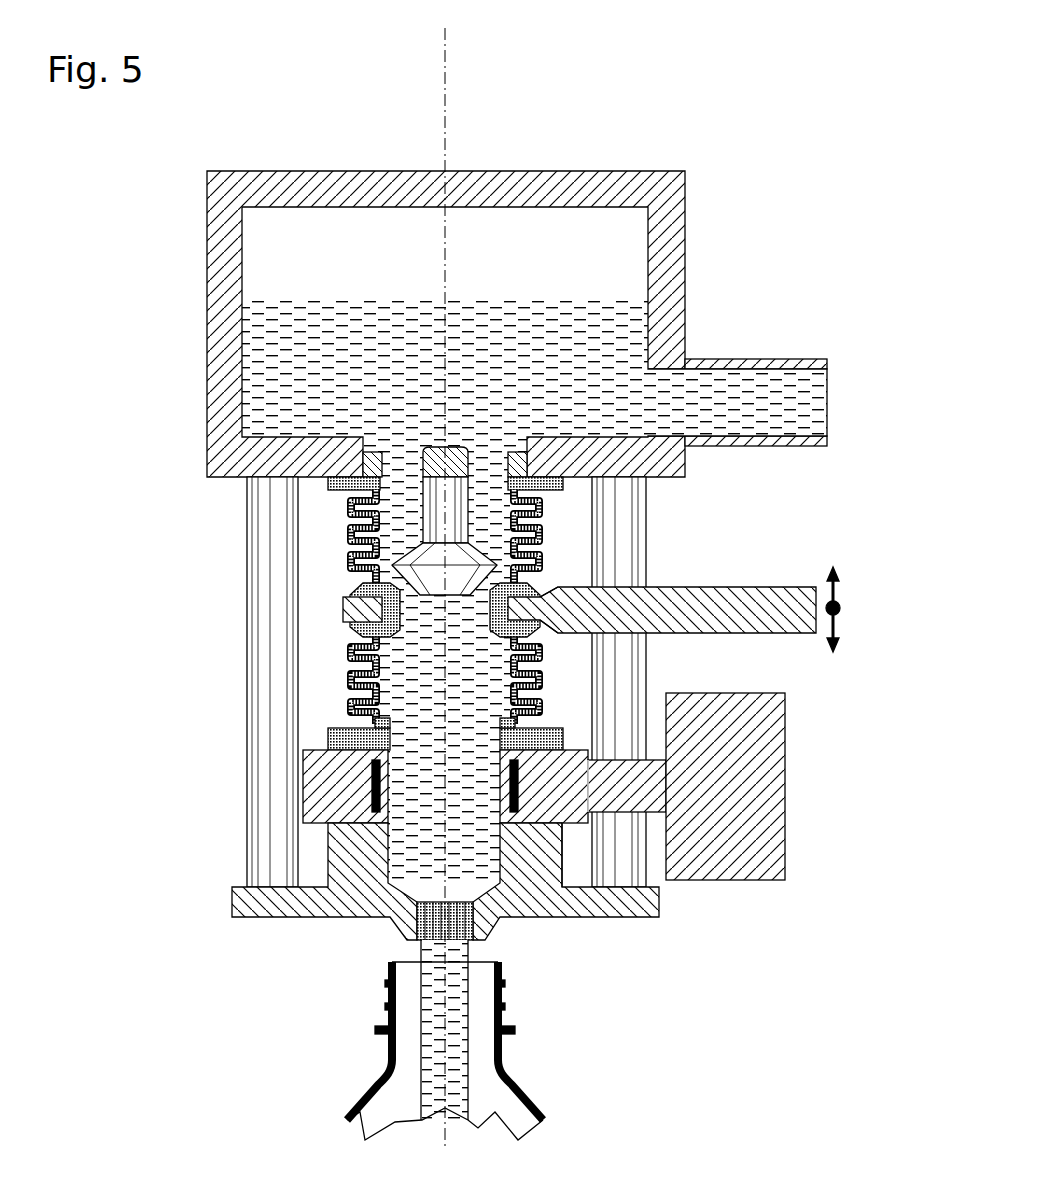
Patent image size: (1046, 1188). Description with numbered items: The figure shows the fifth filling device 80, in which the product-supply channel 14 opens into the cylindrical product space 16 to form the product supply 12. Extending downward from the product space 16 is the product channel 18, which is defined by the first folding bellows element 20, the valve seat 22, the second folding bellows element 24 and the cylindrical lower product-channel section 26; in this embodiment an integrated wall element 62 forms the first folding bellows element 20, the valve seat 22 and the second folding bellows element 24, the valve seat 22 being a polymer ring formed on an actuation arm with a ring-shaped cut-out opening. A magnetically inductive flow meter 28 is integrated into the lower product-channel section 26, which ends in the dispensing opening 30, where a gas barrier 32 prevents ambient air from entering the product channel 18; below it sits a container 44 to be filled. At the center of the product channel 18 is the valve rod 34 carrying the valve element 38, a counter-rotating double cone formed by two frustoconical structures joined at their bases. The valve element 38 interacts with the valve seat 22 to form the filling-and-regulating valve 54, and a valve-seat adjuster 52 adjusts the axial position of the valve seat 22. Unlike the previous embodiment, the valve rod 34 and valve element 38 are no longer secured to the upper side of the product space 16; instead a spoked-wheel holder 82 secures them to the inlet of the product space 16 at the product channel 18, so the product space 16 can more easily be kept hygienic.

The product supply 12 is at (729, 249).
The product-supply channel 14 is at (740, 400).
The product space 16 is at (587, 262).
The product channel 18 is at (313, 645).
The first folding bellows element 20 is at (350, 510).
The valve seat 22 is at (353, 590).
The second folding bellows element 24 is at (348, 673).
The lower product-channel section 26 is at (577, 847).
The magnetically inductive flow meter 28 is at (733, 758).
The dispensing opening 30 is at (405, 949).
The gas barrier 32 is at (480, 932).
The valve rod 34 is at (438, 498).
The valve element 38 is at (547, 560).
The container 44 is at (537, 1108).
The valve-seat adjuster 52 is at (841, 606).
The filling-and-regulating valve 54 is at (547, 635).
The integrated wall element 62 is at (343, 698).
The fifth filling device 80 is at (293, 120).
The spoked-wheel holder 82 is at (408, 463).